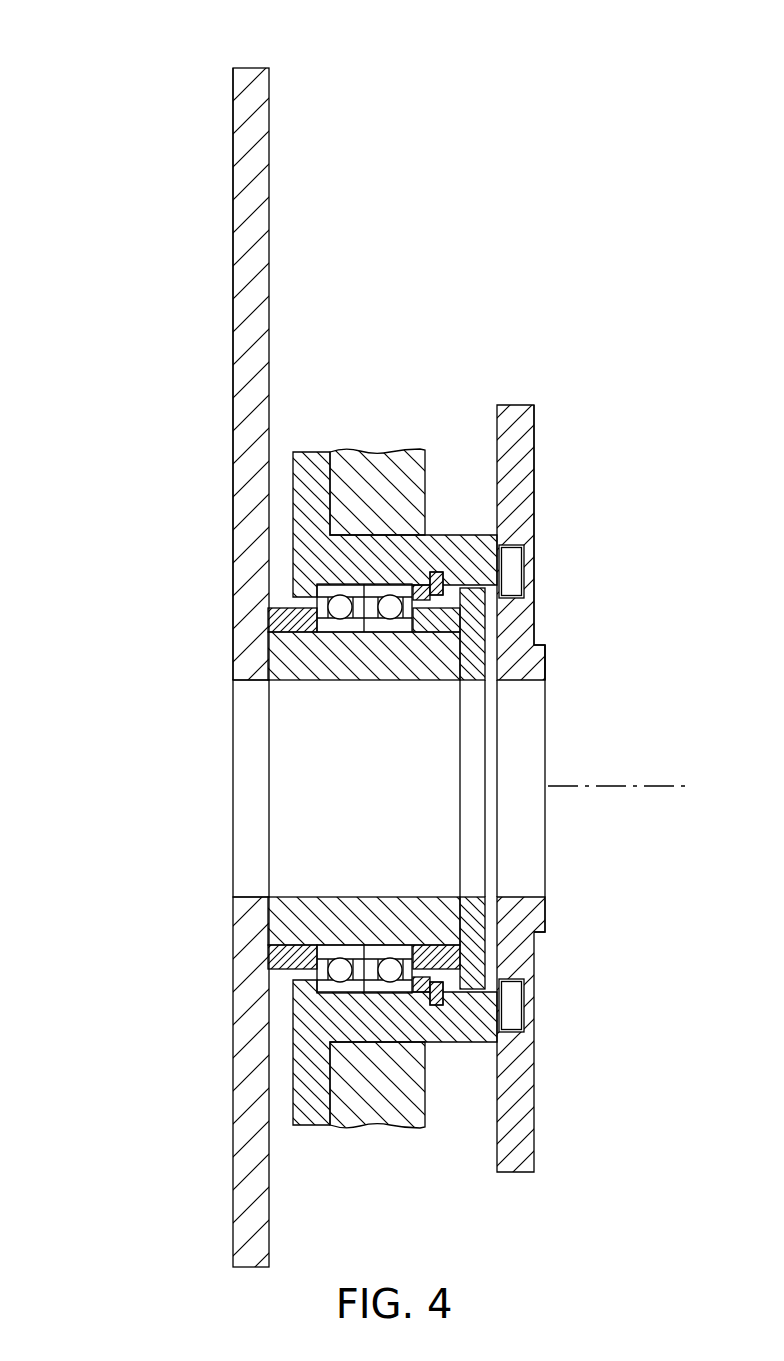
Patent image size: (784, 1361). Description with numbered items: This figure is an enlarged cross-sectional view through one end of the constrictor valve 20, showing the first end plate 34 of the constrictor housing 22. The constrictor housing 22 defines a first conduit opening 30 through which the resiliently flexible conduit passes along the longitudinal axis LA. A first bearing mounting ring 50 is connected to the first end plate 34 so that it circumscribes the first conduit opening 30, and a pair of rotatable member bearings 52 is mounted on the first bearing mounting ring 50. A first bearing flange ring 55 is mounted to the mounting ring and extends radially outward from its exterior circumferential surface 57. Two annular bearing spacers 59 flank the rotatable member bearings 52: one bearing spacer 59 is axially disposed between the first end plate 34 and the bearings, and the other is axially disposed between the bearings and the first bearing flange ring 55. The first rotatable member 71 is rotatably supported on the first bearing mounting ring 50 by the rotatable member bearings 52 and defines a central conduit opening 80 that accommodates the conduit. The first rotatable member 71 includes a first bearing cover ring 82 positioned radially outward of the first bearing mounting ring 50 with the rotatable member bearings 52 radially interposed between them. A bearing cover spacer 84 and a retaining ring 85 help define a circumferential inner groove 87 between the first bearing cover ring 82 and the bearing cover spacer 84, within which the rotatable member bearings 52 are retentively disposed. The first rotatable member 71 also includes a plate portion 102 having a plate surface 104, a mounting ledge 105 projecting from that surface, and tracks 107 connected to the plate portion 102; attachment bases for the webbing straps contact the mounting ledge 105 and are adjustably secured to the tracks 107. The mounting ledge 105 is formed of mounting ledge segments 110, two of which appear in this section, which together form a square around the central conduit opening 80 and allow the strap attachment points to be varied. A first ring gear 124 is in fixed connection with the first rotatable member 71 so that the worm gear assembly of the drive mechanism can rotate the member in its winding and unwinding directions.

The fan assembly 20 is at (97, 102).
The constrictor housing 22 is at (207, 148).
The first end plate 34 is at (233, 213).
The first conduit opening 30 is at (257, 793).
The first bearing cover ring 82 is at (307, 452).
The first ring gear 124 is at (372, 450).
The first bearing mounting ring 50 is at (343, 680).
The first bearing flange ring 55 is at (470, 682).
The rotatable member bearings 52 is at (253, 718).
The circumferential inner groove 87 is at (358, 588).
The exterior circumferential surface 57 is at (290, 628).
The bearing spacers 59 is at (268, 608).
The bearing cover spacer 84 is at (438, 572).
The retaining ring 85 is at (443, 595).
The first rotatable member 71 is at (587, 762).
The plate portion 102 is at (515, 480).
The plate surface 104 is at (535, 493).
The tracks 107 is at (513, 568).
The mounting ledge segments 110 is at (537, 645).
The mounting ledge 105 is at (546, 645).
The central conduit opening 80 is at (523, 857).
The longitudinal axis LA is at (636, 784).